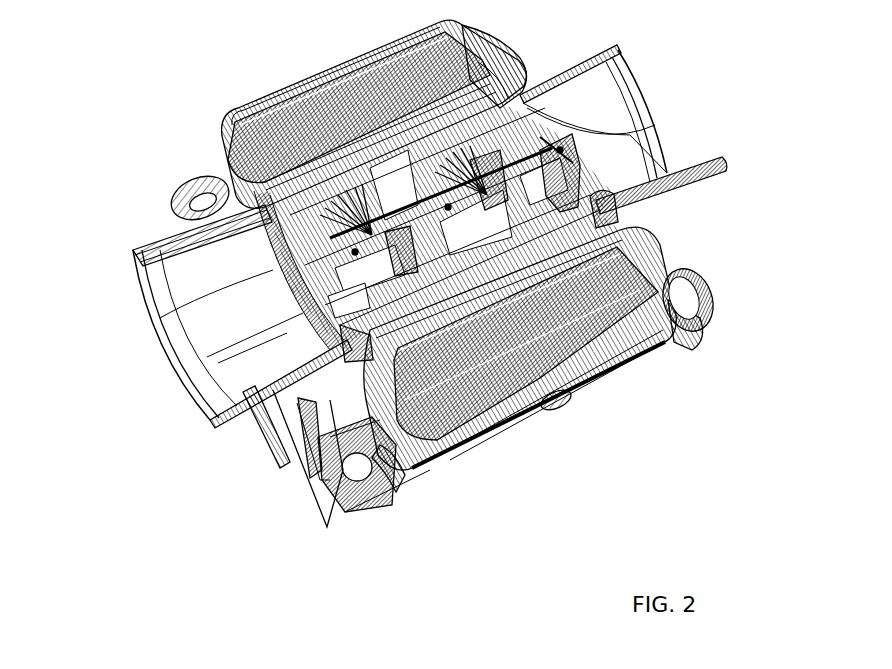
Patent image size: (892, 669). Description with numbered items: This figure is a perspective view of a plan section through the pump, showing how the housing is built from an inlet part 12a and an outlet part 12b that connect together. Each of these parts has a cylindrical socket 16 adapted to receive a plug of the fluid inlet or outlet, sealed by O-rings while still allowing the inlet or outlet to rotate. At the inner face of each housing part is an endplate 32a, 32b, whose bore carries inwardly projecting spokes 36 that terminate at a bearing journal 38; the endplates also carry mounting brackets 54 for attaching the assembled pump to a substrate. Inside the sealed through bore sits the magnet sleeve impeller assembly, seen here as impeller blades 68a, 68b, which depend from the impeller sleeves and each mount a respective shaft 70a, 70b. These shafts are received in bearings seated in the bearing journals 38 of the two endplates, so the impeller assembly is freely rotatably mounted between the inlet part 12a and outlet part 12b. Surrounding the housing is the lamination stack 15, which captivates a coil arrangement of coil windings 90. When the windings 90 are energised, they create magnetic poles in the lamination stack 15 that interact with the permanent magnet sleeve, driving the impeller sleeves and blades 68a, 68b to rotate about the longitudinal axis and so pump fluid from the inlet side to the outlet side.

The inlet part 12a is at (390, 502).
The outlet part 12b is at (700, 333).
The lamination stack 15 is at (270, 130).
The cylindrical socket 16 is at (582, 118).
The endplate of inlet part 32a is at (253, 413).
The endplate of outlet part 32b is at (617, 220).
The spokes 36 is at (585, 177).
The bearing journal 38 is at (585, 130).
The mounting brackets 54 is at (700, 280).
The impeller blades 68a is at (372, 132).
The impeller blades 68b is at (447, 36).
The shaft 70a is at (487, 367).
The shaft 70b is at (633, 373).
The coil windings 90 is at (560, 365).